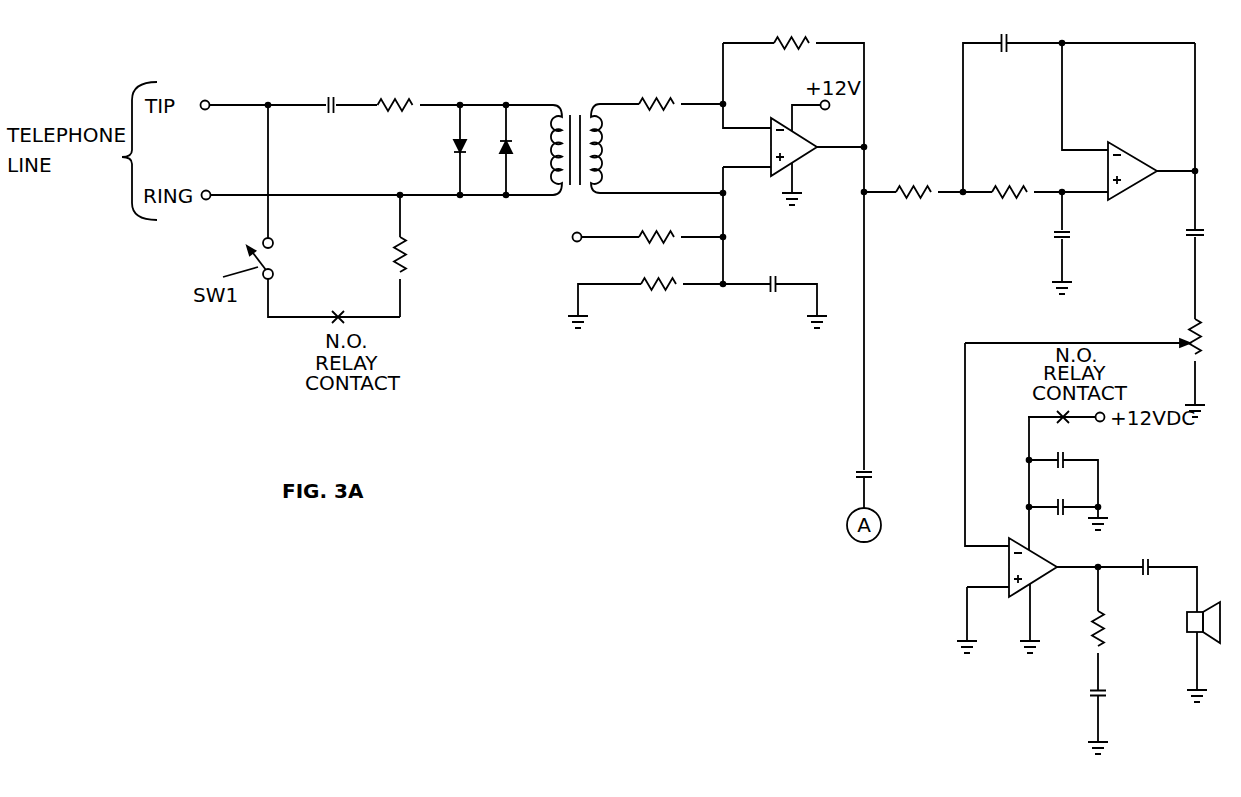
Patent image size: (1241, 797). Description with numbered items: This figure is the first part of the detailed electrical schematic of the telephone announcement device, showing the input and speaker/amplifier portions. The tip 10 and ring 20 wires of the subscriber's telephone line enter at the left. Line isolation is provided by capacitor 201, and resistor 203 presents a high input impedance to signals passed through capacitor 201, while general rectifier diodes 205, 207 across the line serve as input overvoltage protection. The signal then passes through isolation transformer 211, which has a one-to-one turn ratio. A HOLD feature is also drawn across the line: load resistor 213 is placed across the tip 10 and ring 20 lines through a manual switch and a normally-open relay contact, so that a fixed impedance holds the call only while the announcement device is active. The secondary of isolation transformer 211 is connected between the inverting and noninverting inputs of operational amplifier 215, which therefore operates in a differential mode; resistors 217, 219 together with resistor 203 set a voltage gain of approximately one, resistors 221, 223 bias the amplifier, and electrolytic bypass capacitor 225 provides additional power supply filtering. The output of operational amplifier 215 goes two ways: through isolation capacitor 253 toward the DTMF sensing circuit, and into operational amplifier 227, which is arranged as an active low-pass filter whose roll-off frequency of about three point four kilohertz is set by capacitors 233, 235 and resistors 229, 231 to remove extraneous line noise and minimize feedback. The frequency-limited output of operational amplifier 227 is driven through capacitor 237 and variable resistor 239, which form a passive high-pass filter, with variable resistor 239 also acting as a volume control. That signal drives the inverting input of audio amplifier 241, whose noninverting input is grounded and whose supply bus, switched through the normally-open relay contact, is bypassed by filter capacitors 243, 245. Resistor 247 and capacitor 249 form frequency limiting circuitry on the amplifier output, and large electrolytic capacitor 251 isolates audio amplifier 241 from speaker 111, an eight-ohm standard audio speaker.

The tip wire 10 is at (242, 102).
The ring wire 20 is at (252, 193).
The capacitor 201 is at (330, 93).
The resistor 203 is at (402, 100).
The rectifier diode 205 is at (453, 147).
The rectifier diode 207 is at (510, 147).
The isolation transformer 211 is at (575, 112).
The load resistor 213 is at (407, 257).
The operational amplifier 215 is at (803, 157).
The resistor 217 is at (788, 42).
The resistor 219 is at (667, 100).
The resistor 221 is at (667, 232).
The resistor 223 is at (670, 280).
The electrolytic bypass capacitor 225 is at (778, 273).
The operational amplifier 227 is at (1133, 147).
The resistor 229 is at (917, 197).
The resistor 231 is at (1010, 193).
The capacitor 233 is at (997, 33).
The capacitor 235 is at (1077, 235).
The capacitor 237 is at (1185, 242).
The variable resistor 239 is at (1193, 325).
The audio amplifier 241 is at (1040, 577).
The filter capacitor 243 is at (1055, 453).
The filter capacitor 245 is at (1055, 502).
The resistor 247 is at (1103, 632).
The capacitor 249 is at (1112, 698).
The electrolytic capacitor 251 is at (1148, 553).
The isolation capacitor 253 is at (875, 468).
The speaker 111 is at (1185, 615).